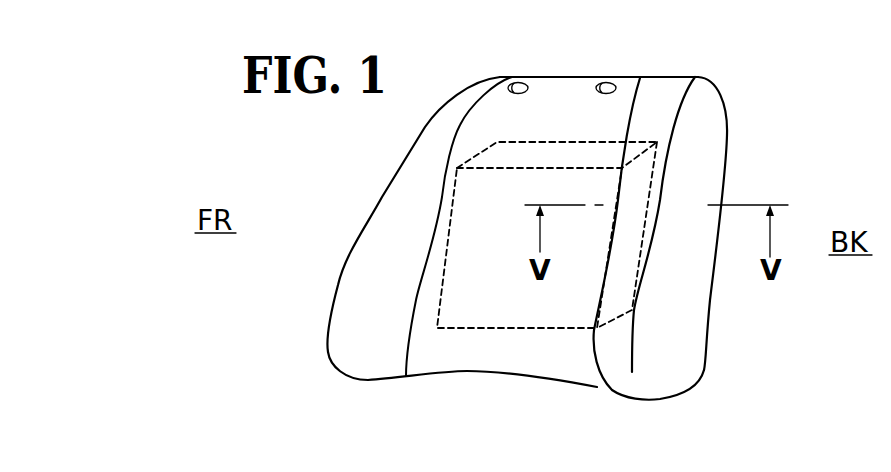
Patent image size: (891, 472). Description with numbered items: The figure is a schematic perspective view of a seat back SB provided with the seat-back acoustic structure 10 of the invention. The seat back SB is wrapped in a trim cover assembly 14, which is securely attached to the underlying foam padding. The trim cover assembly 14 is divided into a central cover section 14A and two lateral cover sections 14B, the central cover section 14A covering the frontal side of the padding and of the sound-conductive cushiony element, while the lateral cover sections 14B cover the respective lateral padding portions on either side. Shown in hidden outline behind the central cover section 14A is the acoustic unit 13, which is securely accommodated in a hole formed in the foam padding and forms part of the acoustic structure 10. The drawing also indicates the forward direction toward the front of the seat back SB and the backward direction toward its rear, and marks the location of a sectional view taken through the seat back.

The seat-back acoustic structure 10 is at (486, 380).
The acoustic unit 13 is at (537, 342).
The trim cover assembly 14 is at (372, 195).
The central cover section 14A is at (430, 288).
The lateral cover section 14B is at (425, 140).
The seat back SB is at (745, 144).